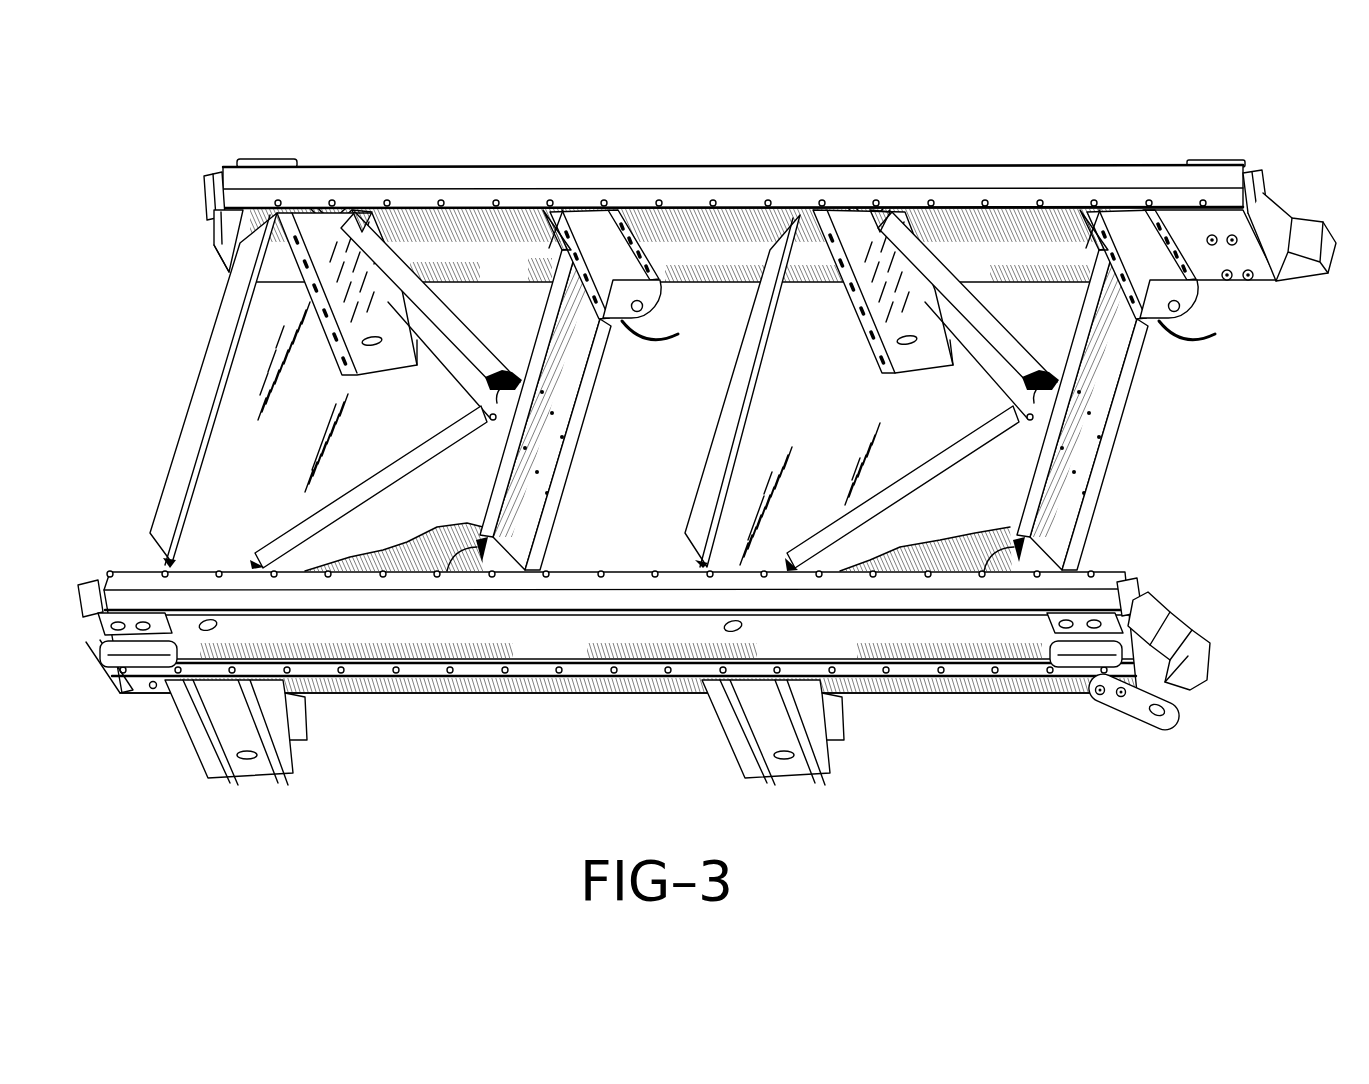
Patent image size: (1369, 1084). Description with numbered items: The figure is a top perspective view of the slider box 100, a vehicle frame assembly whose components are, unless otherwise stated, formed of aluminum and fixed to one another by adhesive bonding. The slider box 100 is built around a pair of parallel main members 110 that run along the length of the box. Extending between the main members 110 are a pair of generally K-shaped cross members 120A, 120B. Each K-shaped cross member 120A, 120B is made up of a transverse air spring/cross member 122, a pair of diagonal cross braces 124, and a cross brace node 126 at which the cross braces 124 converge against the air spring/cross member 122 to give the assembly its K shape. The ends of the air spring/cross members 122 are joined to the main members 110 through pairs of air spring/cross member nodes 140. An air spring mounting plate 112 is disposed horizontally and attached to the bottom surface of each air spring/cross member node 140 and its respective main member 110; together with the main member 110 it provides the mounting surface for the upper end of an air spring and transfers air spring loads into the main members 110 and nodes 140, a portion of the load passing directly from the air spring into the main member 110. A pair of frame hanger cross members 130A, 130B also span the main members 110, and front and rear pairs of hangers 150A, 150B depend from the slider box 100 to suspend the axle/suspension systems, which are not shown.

The slider box 100 is at (141, 206).
The main member 110 is at (1232, 290).
The air spring mounting plate 112 is at (662, 300).
The K-shaped cross member 120A is at (590, 455).
The K-shaped cross member 120B is at (1132, 456).
The air spring/cross member 122 is at (562, 507).
The cross brace 124 is at (445, 308).
The cross brace node 126 is at (515, 367).
The frame hanger cross member 130A is at (213, 353).
The frame hanger cross member 130B is at (720, 417).
The air spring/cross member node 140 is at (640, 330).
The front hanger 150A is at (387, 375).
The rear hanger 150B is at (917, 373).